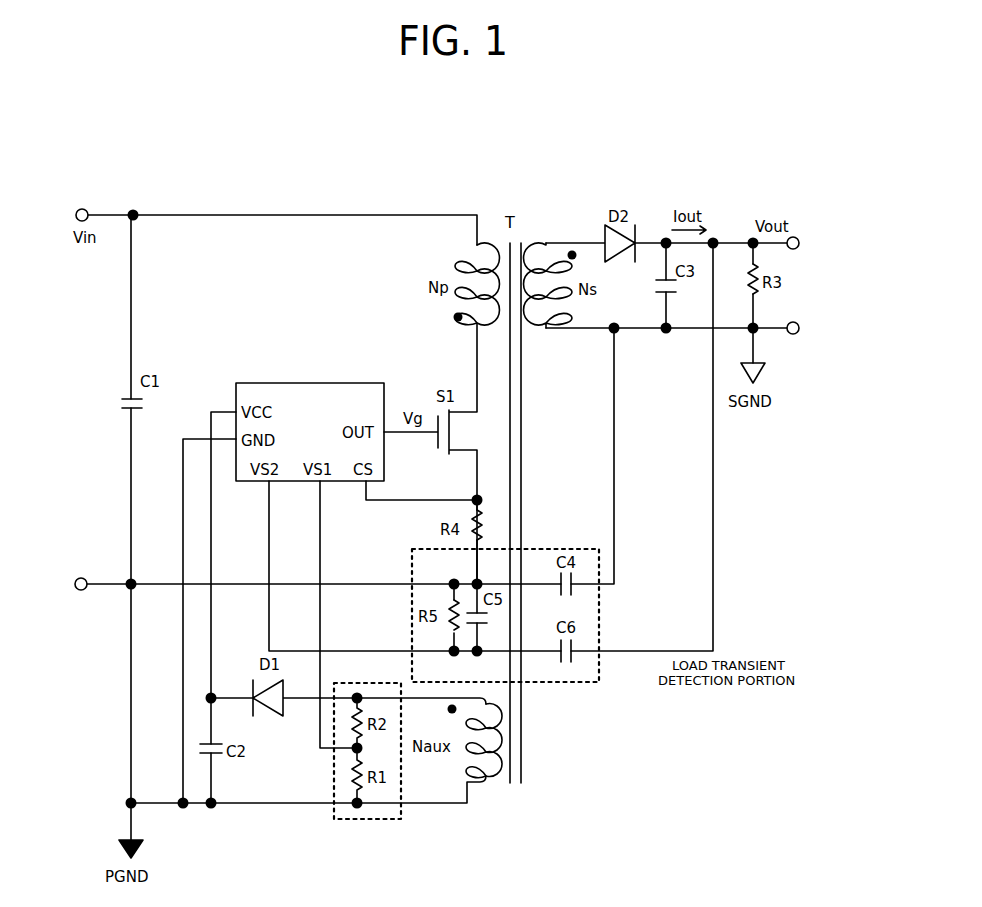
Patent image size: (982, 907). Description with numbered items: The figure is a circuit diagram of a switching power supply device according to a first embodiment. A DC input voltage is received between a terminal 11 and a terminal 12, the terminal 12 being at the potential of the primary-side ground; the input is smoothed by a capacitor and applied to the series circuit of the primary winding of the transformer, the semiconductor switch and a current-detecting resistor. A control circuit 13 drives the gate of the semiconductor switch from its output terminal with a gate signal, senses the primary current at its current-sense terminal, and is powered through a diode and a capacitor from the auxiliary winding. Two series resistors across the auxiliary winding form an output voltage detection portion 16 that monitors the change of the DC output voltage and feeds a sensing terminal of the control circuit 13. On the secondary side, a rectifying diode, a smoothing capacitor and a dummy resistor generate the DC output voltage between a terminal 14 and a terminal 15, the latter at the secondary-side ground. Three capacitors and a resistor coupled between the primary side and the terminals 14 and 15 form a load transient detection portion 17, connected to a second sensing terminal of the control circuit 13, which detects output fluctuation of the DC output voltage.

The terminal 11 is at (81, 208).
The terminal 12 is at (80, 577).
The control circuit 13 is at (310, 383).
The terminal 14 is at (799, 239).
The terminal 15 is at (799, 324).
The output voltage detection portion 16 is at (367, 819).
The load transient detection portion 17 is at (599, 672).